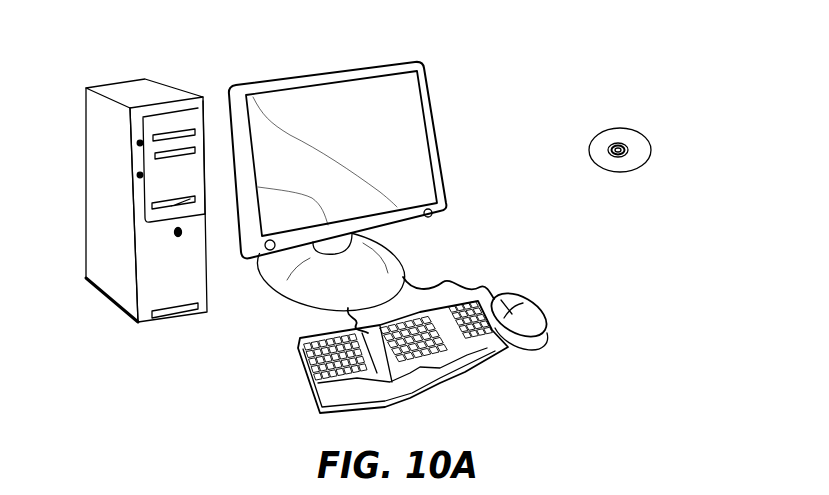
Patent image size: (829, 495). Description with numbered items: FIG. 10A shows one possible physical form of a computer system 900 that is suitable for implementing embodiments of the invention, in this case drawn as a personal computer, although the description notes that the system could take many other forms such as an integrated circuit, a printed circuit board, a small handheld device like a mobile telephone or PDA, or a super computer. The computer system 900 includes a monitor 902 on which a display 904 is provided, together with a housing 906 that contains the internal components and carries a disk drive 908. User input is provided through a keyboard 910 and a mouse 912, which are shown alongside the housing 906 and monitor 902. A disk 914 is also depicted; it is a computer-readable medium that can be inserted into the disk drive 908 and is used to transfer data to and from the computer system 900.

The computer system 900 is at (556, 44).
The monitor 902 is at (444, 158).
The display 904 is at (400, 99).
The housing 906 is at (132, 89).
The disk drive 908 is at (188, 196).
The keyboard 910 is at (300, 384).
The mouse 912 is at (543, 308).
The disk 914 is at (634, 129).